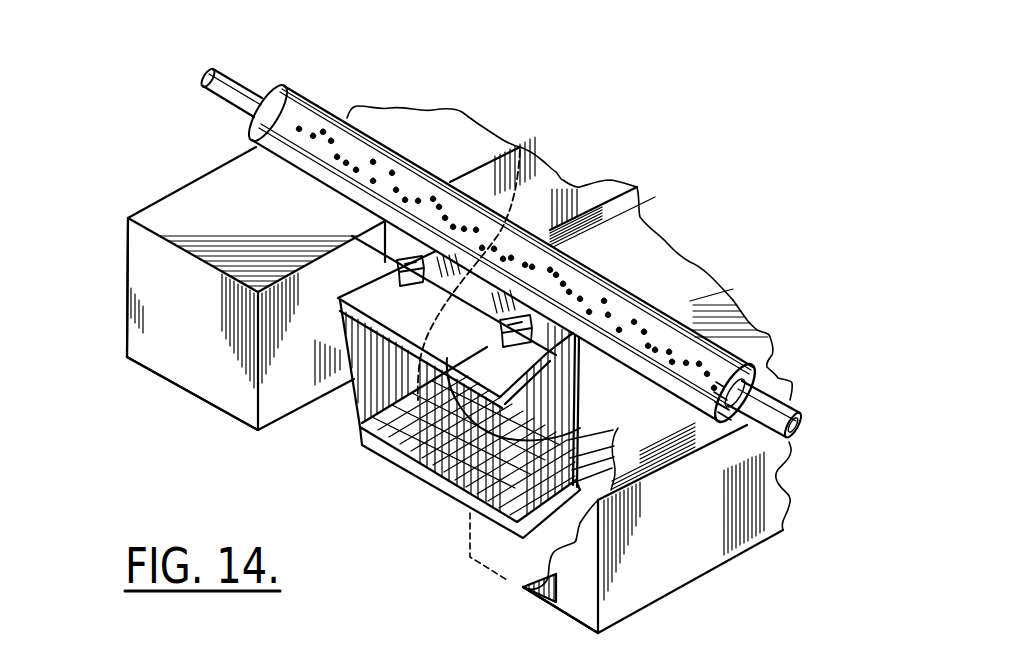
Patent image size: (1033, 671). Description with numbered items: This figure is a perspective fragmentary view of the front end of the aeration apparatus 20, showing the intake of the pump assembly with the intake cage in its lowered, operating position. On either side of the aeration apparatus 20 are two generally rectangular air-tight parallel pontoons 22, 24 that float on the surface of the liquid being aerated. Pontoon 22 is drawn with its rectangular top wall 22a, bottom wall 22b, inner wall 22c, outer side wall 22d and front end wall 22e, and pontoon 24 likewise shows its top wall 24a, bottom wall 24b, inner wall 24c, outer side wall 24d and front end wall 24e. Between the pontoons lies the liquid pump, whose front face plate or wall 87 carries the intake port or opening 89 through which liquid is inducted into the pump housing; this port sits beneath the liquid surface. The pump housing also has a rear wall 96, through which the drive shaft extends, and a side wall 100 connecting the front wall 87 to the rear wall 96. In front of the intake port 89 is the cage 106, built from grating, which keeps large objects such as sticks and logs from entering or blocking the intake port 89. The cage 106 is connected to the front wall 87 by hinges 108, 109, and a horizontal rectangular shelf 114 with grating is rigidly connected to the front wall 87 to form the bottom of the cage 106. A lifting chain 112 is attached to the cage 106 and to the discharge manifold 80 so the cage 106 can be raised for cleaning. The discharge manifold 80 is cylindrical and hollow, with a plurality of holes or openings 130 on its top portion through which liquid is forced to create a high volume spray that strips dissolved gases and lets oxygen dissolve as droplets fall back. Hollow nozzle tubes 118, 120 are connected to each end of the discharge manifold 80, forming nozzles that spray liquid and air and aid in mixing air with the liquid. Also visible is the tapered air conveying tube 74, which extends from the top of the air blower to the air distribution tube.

The aeration apparatus 20 is at (312, 68).
The pontoon 22 is at (696, 590).
The top wall 22a is at (762, 334).
The bottom wall 22b is at (560, 612).
The inner wall 22c is at (470, 540).
The outer side wall 22d is at (700, 537).
The front end wall 22e is at (543, 600).
The pontoon 24 is at (136, 205).
The top wall 24a is at (258, 211).
The bottom wall 24b is at (185, 397).
The inner wall 24c is at (293, 400).
The outer side wall 24d is at (127, 295).
The front end wall 24e is at (203, 324).
The tapered air conveying tube 74 is at (615, 200).
The discharge manifold 80 is at (380, 128).
The front face plate 87 is at (393, 257).
The intake port 89 is at (594, 450).
The rear wall 96 is at (602, 385).
The side wall 100 is at (660, 470).
The cage 106 is at (353, 458).
The hinge 108 is at (412, 255).
The hinge 109 is at (548, 292).
The lifting chain 112 is at (540, 180).
The horizontal rectangular shelf 114 is at (442, 486).
The hollow nozzle tube 118 is at (226, 88).
The hollow nozzle tube 120 is at (793, 401).
The holes 130 is at (372, 183).